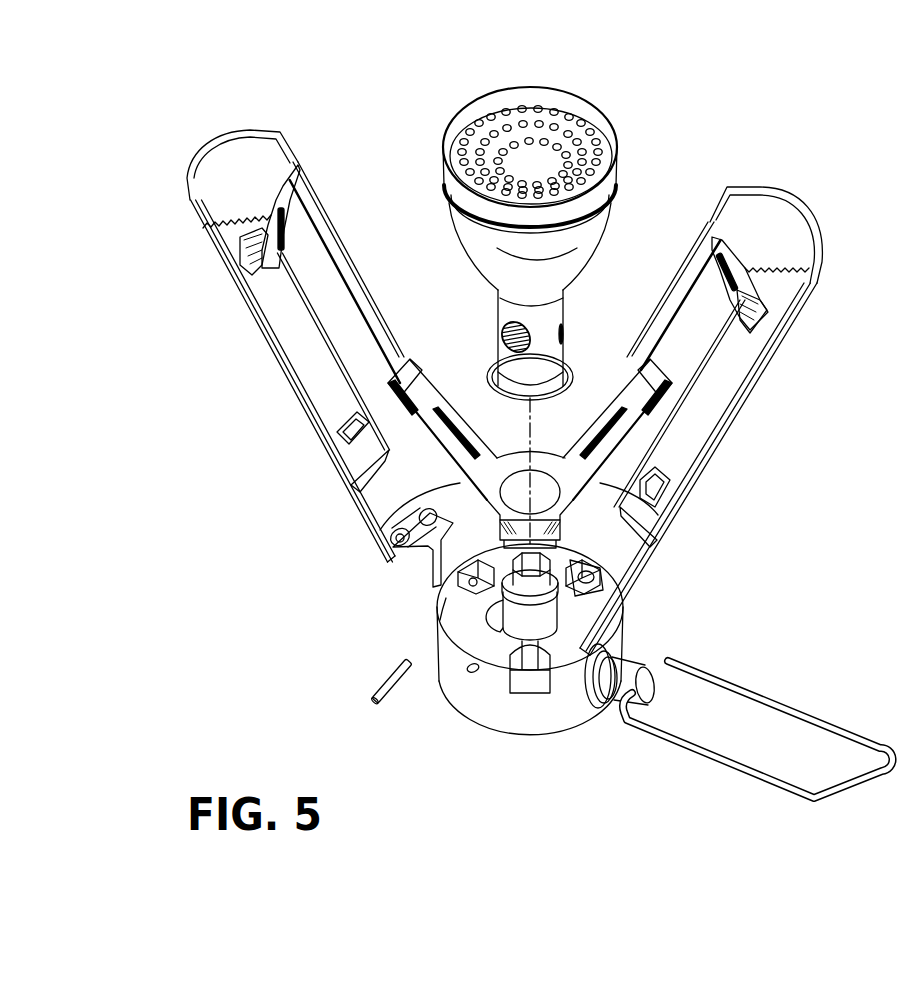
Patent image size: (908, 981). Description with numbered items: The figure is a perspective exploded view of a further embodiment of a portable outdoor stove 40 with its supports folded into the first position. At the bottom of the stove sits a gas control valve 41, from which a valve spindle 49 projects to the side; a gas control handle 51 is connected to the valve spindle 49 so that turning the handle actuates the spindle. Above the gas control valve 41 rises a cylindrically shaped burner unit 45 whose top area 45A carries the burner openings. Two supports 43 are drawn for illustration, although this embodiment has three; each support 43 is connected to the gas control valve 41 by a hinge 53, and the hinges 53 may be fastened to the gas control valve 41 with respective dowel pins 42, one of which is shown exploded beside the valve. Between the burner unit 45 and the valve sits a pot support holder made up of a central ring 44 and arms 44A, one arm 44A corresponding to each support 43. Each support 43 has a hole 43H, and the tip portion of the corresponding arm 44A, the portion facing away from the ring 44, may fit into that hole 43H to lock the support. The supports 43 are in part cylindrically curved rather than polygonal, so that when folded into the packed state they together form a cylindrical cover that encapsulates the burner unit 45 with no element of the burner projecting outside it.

The portable outdoor stove 40 is at (815, 42).
The gas control valve 41 is at (491, 727).
The dowel pin 42 is at (378, 690).
The support 43 is at (185, 178).
The hole 43H is at (367, 430).
The central ring 44 is at (480, 503).
The arm 44A is at (440, 396).
The burner unit 45 is at (468, 104).
The top area 45A is at (510, 117).
The valve spindle 49 is at (633, 662).
The gas control handle 51 is at (847, 733).
The hinge 53 is at (417, 557).